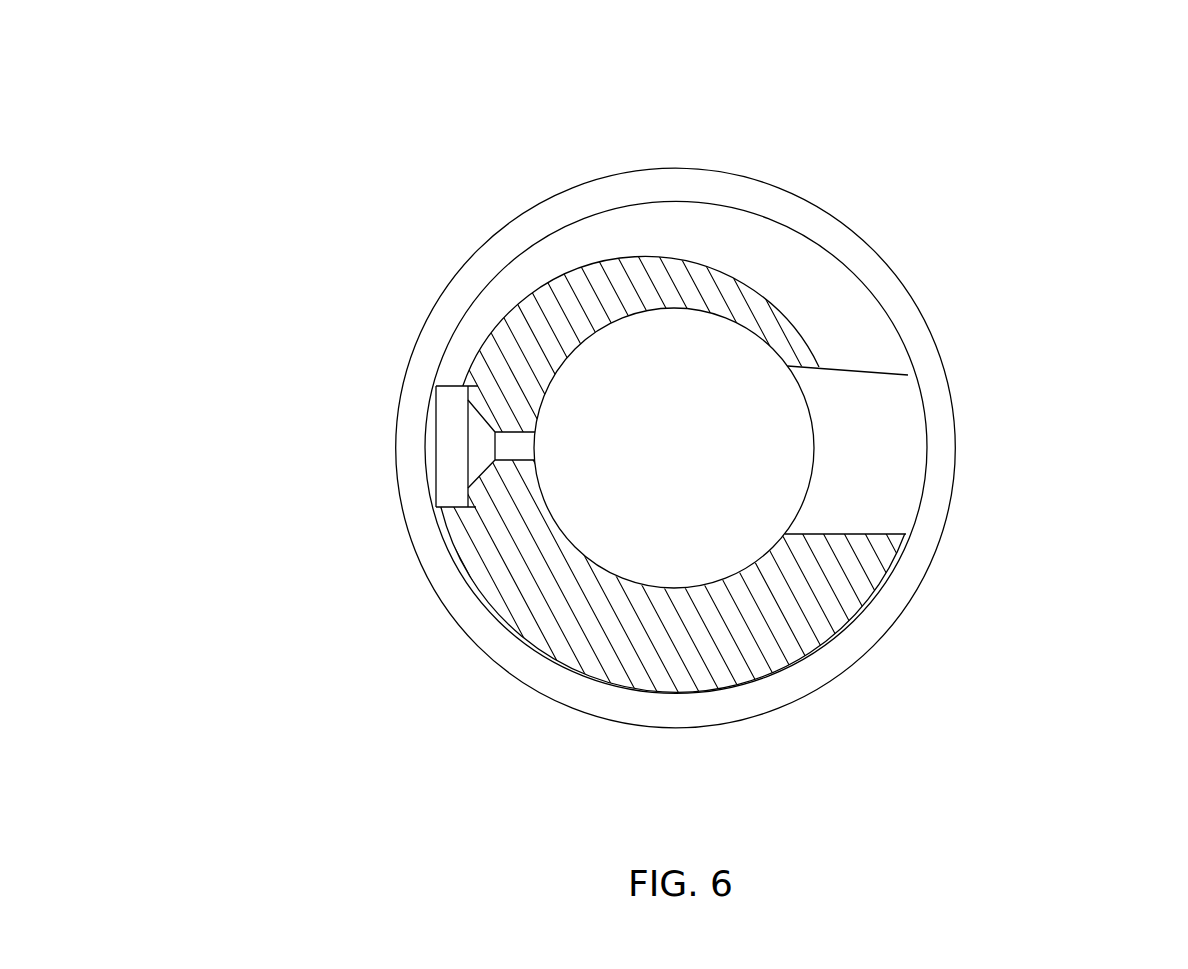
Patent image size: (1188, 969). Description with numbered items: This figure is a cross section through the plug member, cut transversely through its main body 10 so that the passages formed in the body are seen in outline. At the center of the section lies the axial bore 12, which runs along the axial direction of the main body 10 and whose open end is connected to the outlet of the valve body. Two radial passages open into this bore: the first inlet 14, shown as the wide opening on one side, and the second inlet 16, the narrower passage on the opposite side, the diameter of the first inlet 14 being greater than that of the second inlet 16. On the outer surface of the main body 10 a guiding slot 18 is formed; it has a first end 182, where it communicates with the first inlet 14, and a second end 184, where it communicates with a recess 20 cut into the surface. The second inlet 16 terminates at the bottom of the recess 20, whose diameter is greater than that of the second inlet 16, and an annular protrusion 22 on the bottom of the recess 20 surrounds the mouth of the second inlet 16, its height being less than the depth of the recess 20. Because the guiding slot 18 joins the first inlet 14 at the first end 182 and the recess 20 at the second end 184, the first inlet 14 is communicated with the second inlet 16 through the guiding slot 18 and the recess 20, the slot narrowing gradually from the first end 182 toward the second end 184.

The main body 10 is at (840, 221).
The axial bore 12 is at (775, 481).
The first inlet 14 is at (895, 422).
The second inlet 16 is at (505, 440).
The guiding slot 18 is at (707, 212).
The first end 182 is at (862, 330).
The second end 184 is at (456, 384).
The recess 20 is at (447, 457).
The annular protrusion 22 is at (470, 495).